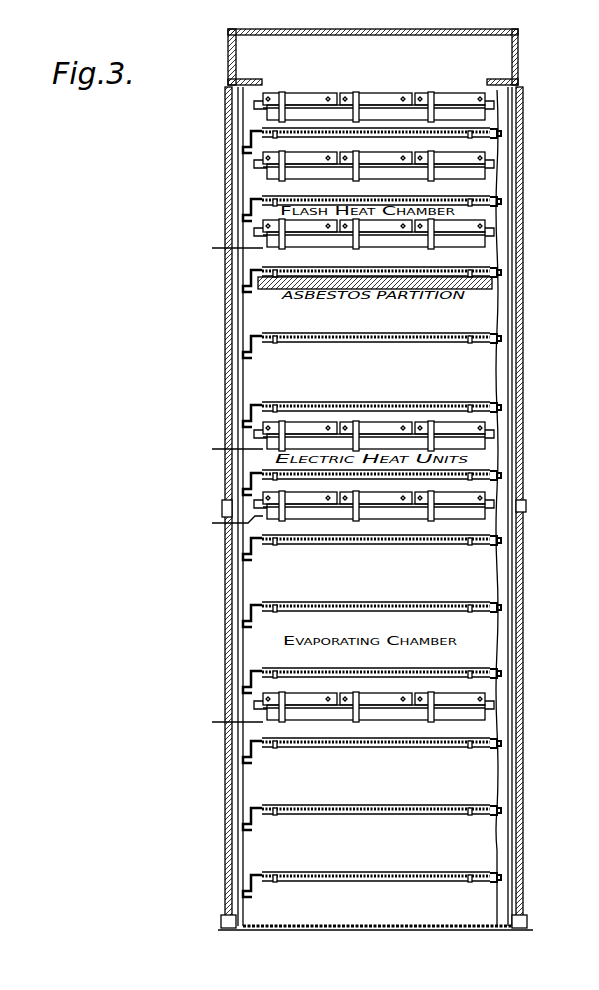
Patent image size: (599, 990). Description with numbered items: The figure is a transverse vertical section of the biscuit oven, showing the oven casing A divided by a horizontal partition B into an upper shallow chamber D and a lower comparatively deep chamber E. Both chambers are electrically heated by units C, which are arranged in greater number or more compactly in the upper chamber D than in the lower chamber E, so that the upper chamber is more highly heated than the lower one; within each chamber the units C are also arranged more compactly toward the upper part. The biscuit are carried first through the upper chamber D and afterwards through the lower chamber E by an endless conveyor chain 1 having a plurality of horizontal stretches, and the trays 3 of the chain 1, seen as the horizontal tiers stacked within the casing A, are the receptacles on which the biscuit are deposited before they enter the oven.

The oven casing A is at (523, 380).
The horizontal partition B is at (484, 290).
The electric heating units C is at (378, 160).
The upper chamber D is at (246, 192).
The lower chamber E is at (246, 320).
The endless conveyor chain 1 is at (246, 134).
The trays 3 is at (305, 194).